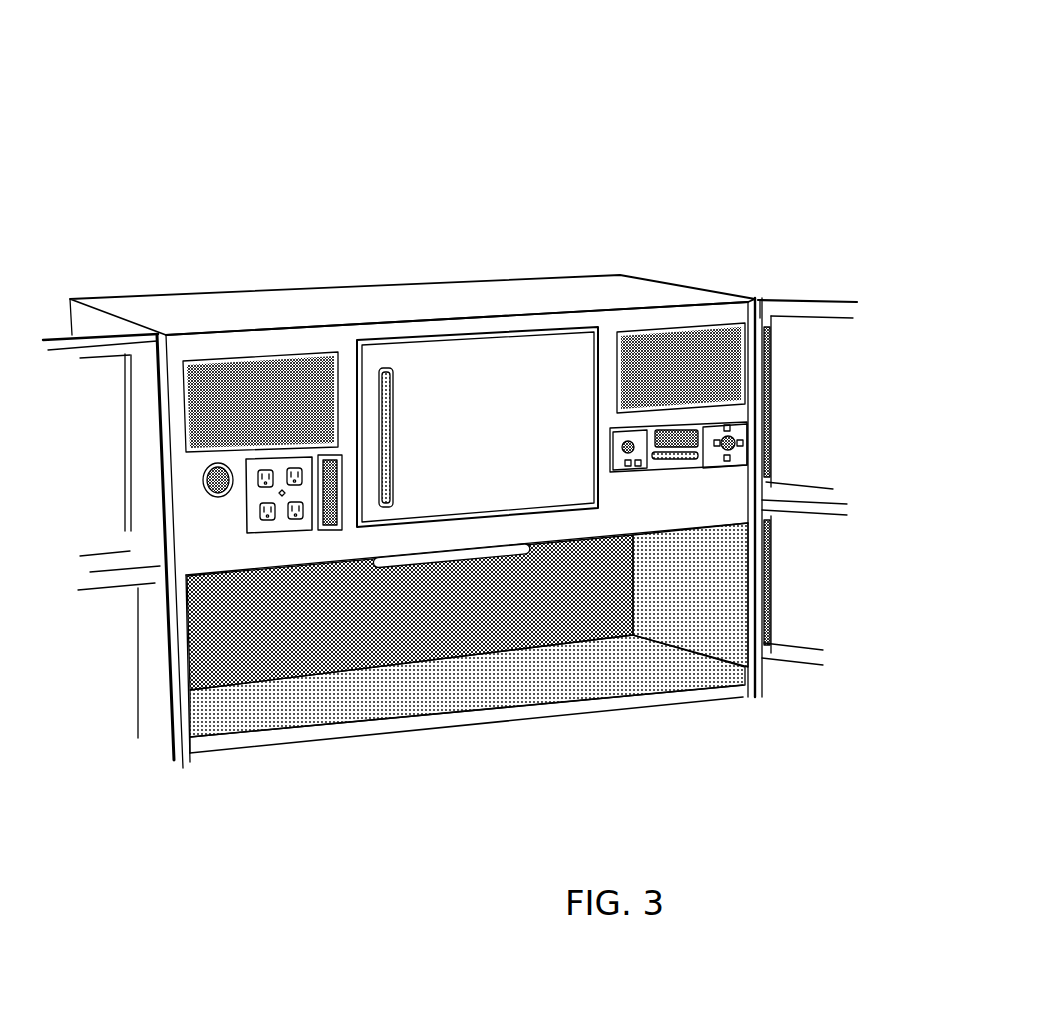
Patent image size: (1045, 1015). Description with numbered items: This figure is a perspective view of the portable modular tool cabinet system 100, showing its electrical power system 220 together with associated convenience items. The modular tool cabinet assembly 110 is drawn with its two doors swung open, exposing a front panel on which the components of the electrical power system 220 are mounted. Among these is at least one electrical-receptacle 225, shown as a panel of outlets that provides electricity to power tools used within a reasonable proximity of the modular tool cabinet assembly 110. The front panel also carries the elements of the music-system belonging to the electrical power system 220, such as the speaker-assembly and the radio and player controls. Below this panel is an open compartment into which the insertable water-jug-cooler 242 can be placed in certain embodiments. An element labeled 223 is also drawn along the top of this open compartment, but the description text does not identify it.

The portable modular tool cabinet system 100 is at (577, 75).
The modular tool cabinet assembly 110 is at (602, 120).
The electrical power system 220 is at (287, 537).
The electrical-receptacle 225 is at (262, 522).
The light bar 223 is at (458, 563).
The insertable water-jug-cooler 242 is at (230, 710).